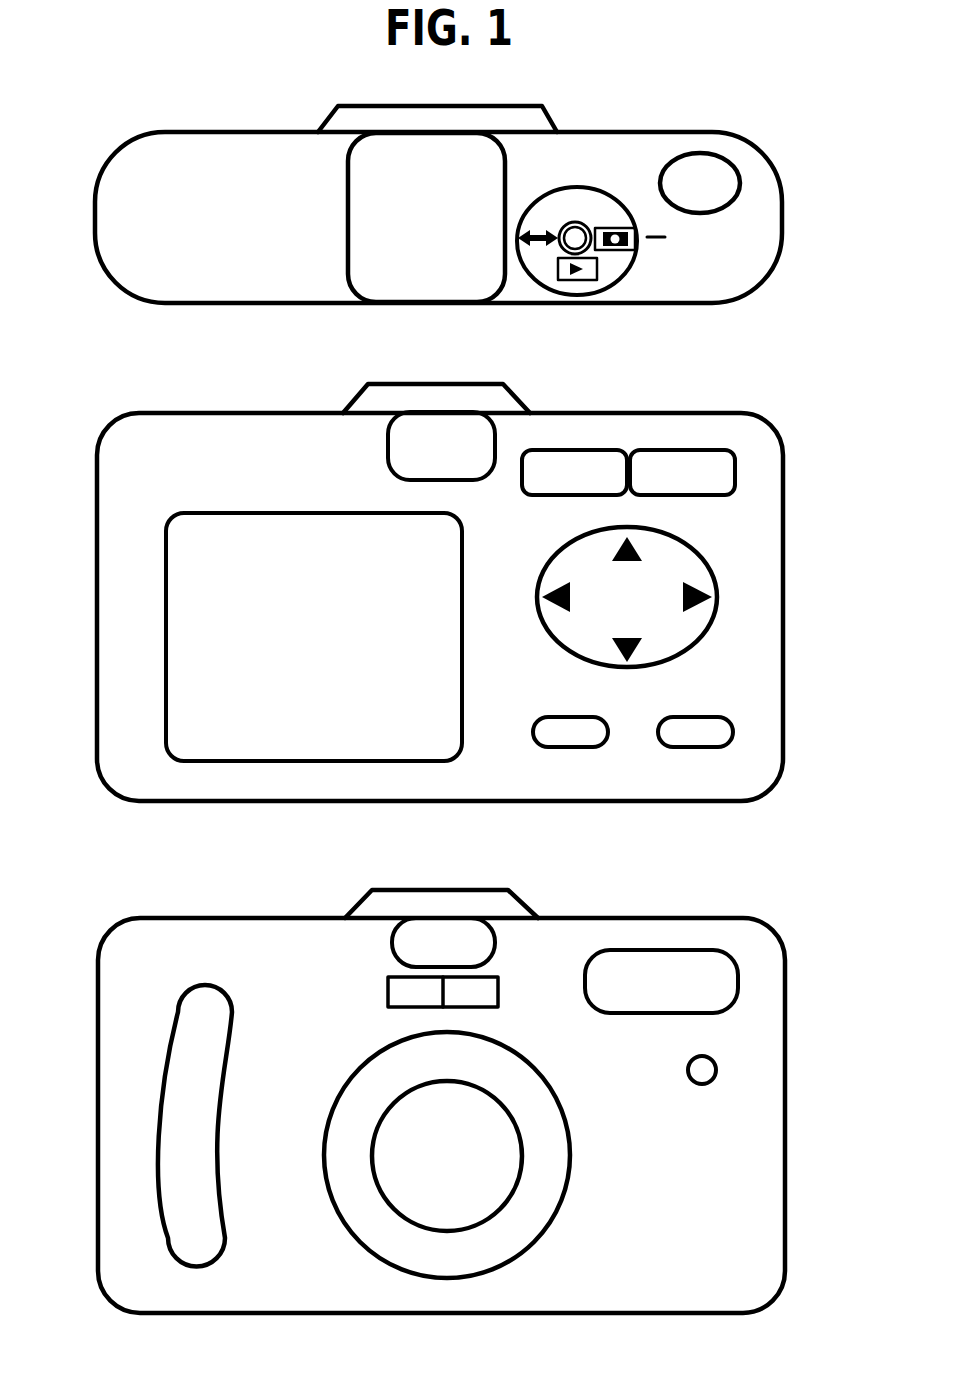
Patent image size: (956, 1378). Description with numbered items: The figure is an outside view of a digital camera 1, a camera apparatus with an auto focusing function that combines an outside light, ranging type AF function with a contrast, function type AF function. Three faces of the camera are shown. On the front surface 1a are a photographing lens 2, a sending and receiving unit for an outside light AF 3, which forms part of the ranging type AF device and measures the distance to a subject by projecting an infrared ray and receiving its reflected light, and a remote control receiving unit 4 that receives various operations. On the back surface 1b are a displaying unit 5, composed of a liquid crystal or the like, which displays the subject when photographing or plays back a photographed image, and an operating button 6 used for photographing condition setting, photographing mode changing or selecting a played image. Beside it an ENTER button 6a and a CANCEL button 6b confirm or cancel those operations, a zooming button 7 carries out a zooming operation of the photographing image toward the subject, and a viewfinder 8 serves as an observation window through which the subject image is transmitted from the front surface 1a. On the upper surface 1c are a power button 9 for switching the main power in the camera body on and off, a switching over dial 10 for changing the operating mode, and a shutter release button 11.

The digital camera 1 is at (449, 217).
The front surface 1a is at (110, 1241).
The back surface 1b is at (110, 725).
The upper surface 1c is at (104, 240).
The photographing lens 2 is at (547, 112).
The sending and receiving unit for outside light AF 3 is at (374, 977).
The remote control receiving unit 4 is at (734, 1059).
The displaying unit 5 is at (247, 778).
The operating button 6 is at (713, 622).
The ENTER button 6a is at (733, 733).
The CANCEL button 6b is at (533, 733).
The zooming button 7 is at (653, 450).
The viewfinder 8 is at (392, 409).
The power button 9 is at (561, 241).
The switching over dial 10 is at (627, 280).
The shutter release button 11 is at (718, 156).